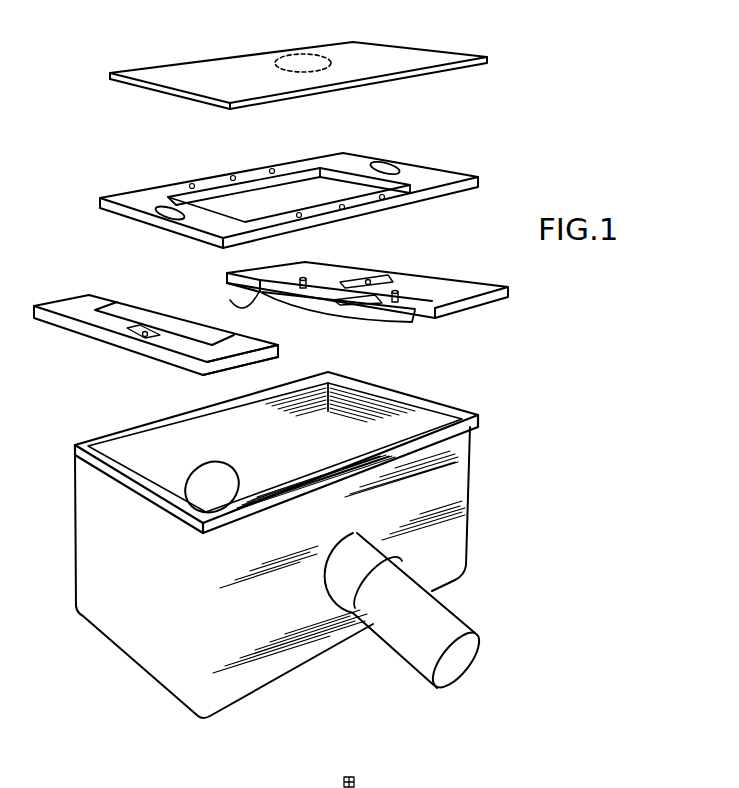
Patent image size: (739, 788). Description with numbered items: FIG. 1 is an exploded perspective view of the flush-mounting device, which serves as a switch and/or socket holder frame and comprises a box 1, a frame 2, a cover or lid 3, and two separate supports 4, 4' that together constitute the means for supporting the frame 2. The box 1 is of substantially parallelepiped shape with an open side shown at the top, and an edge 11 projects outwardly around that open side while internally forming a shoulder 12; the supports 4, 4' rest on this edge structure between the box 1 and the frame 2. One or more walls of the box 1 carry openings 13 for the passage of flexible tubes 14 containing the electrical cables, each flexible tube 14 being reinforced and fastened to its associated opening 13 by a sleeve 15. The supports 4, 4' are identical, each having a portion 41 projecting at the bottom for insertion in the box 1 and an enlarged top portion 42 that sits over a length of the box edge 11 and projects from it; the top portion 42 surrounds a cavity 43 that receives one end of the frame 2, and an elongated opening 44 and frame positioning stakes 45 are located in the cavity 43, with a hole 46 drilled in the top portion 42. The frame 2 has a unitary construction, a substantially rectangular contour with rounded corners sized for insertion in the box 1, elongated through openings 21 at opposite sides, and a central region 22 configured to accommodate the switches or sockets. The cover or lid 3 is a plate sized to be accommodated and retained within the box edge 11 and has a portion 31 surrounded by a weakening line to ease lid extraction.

The box 1 is at (450, 500).
The edge 11 is at (477, 397).
The shoulder 12 is at (383, 408).
The openings 13 is at (228, 482).
The flexible tubes 14 is at (443, 628).
The sleeve 15 is at (352, 578).
The frame 2 is at (433, 178).
The elongated through openings 21 is at (163, 212).
The central region 22 is at (253, 203).
The cover or lid 3 is at (407, 53).
The portion 31 is at (297, 61).
The support 4 is at (156, 335).
The support 4' is at (367, 288).
The portion 41 is at (327, 307).
The top portion 42 is at (237, 345).
The cavity 43 is at (233, 299).
The elongated opening 44 is at (367, 302).
The frame positioning stakes 45 is at (307, 280).
The hole 46 is at (147, 332).